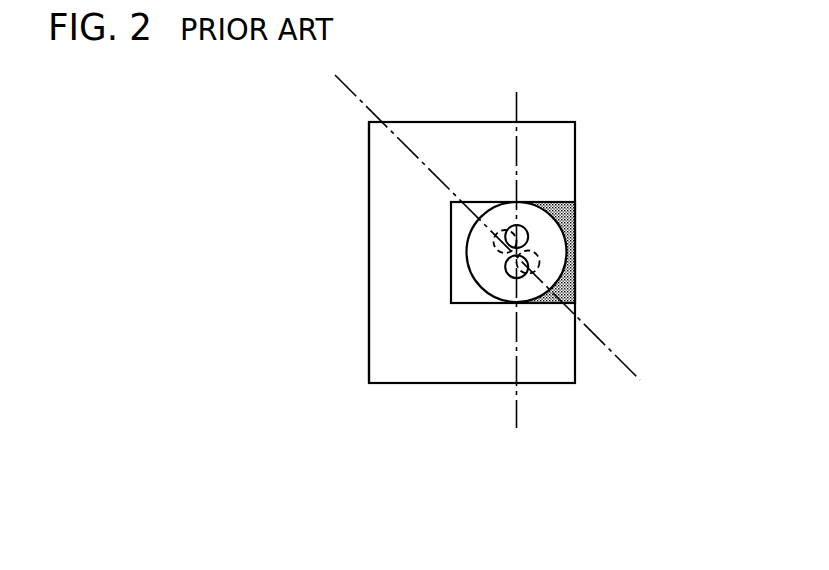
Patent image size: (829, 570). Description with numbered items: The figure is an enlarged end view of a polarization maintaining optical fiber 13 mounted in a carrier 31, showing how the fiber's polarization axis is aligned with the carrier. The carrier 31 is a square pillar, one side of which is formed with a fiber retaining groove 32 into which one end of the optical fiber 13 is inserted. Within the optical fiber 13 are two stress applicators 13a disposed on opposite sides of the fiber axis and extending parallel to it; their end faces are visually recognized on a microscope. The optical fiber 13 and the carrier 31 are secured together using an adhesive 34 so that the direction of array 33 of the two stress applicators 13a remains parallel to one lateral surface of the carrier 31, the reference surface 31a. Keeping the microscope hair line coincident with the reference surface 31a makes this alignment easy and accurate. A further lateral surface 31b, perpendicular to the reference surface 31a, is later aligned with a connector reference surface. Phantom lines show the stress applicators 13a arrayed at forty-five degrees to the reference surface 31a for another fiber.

The carrier 31 is at (368, 153).
The reference surface 31a is at (358, 252).
The lateral surface 31b is at (438, 390).
The fiber retaining groove 32 is at (577, 213).
The direction of array 33 is at (518, 100).
The adhesive 34 is at (577, 293).
The polarization maintaining optical fiber 13 is at (575, 275).
The stress applicators 13a is at (535, 257).